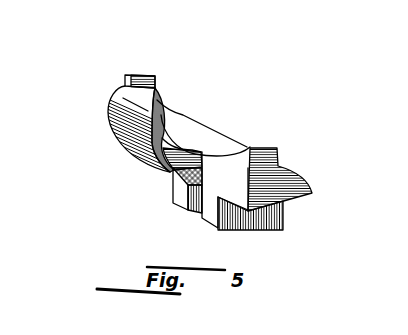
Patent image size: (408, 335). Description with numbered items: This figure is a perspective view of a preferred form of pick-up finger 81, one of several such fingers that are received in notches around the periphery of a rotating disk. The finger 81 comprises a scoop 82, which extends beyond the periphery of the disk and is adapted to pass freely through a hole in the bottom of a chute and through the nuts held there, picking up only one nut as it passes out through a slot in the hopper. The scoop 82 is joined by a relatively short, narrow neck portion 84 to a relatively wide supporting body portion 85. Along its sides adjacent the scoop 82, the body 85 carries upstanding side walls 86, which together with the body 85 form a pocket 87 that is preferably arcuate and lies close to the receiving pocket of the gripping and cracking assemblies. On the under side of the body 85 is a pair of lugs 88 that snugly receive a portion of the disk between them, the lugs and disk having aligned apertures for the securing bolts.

The pick-up finger 81 is at (106, 92).
The scoop 82 is at (112, 119).
The neck portion 84 is at (173, 181).
The supporting body portion 85 is at (198, 137).
The side walls 86 is at (141, 73).
The pocket 87 is at (193, 113).
The lugs 88 is at (182, 203).